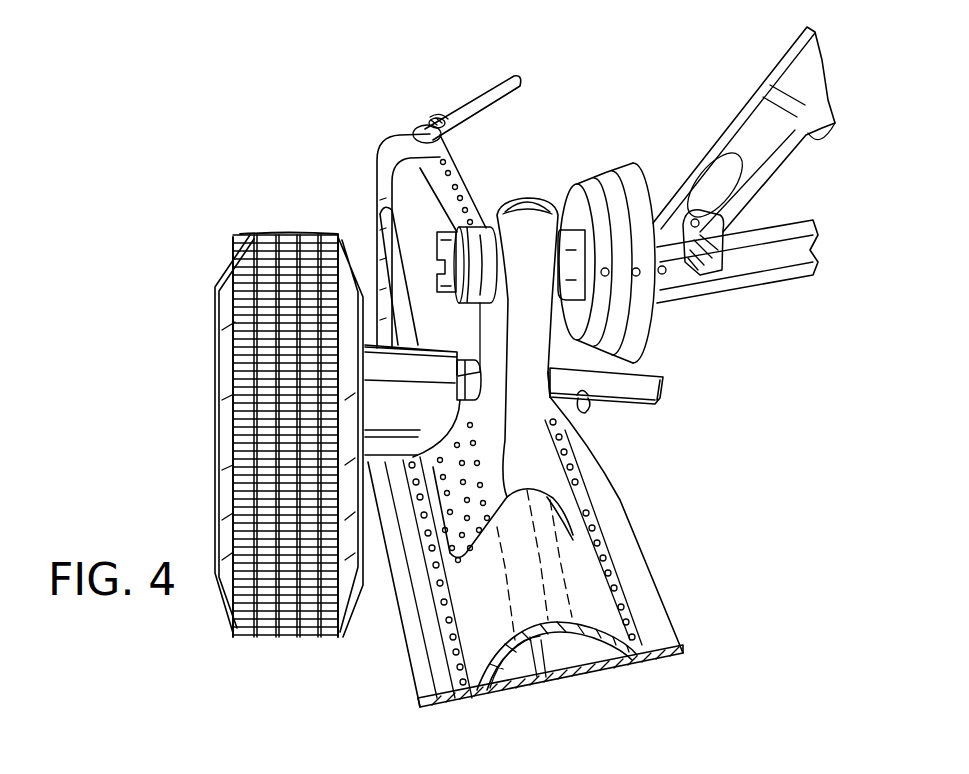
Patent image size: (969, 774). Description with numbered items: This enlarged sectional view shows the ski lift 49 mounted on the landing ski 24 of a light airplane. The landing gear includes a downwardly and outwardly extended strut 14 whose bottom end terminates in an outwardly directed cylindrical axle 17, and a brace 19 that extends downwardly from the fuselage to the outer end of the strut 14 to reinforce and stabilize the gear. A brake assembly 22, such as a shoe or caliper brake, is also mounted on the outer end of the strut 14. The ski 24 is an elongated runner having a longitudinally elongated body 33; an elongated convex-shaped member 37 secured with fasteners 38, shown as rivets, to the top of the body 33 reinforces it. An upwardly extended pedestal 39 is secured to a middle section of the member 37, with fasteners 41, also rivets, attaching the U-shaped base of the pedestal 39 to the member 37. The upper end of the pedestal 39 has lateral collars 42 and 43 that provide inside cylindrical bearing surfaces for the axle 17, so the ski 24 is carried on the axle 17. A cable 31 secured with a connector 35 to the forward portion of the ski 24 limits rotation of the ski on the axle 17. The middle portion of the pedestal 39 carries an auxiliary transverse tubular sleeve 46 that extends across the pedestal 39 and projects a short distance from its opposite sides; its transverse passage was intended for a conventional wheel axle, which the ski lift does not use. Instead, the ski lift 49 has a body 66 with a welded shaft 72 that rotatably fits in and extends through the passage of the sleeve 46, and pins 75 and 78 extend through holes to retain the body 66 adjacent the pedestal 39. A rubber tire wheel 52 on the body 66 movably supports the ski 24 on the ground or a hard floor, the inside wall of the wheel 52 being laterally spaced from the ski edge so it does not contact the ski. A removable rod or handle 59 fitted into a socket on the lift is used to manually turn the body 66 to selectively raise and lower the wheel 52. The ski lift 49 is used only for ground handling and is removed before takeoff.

The strut 14 is at (773, 265).
The axle 17 is at (452, 228).
The brace 19 is at (776, 73).
The brake assembly 22 is at (638, 173).
The airplane landing ski 24 is at (346, 173).
The cable 31 is at (497, 95).
The body 33 is at (508, 688).
The connector 35 is at (522, 205).
The convex-shaped member 37 is at (568, 633).
The fasteners 38 is at (592, 488).
The pedestal 39 is at (545, 188).
The fasteners 41 is at (452, 512).
The collar 42 is at (487, 223).
The collar 43 is at (565, 188).
The auxiliary transverse tubular sleeve 46 is at (556, 403).
The ski lift 49 is at (223, 630).
The rubber tire wheel 52 is at (215, 312).
The handle 59 is at (383, 218).
The body 66 is at (423, 367).
The shaft 72 is at (662, 373).
The pin 75 is at (457, 390).
The pin 78 is at (588, 406).